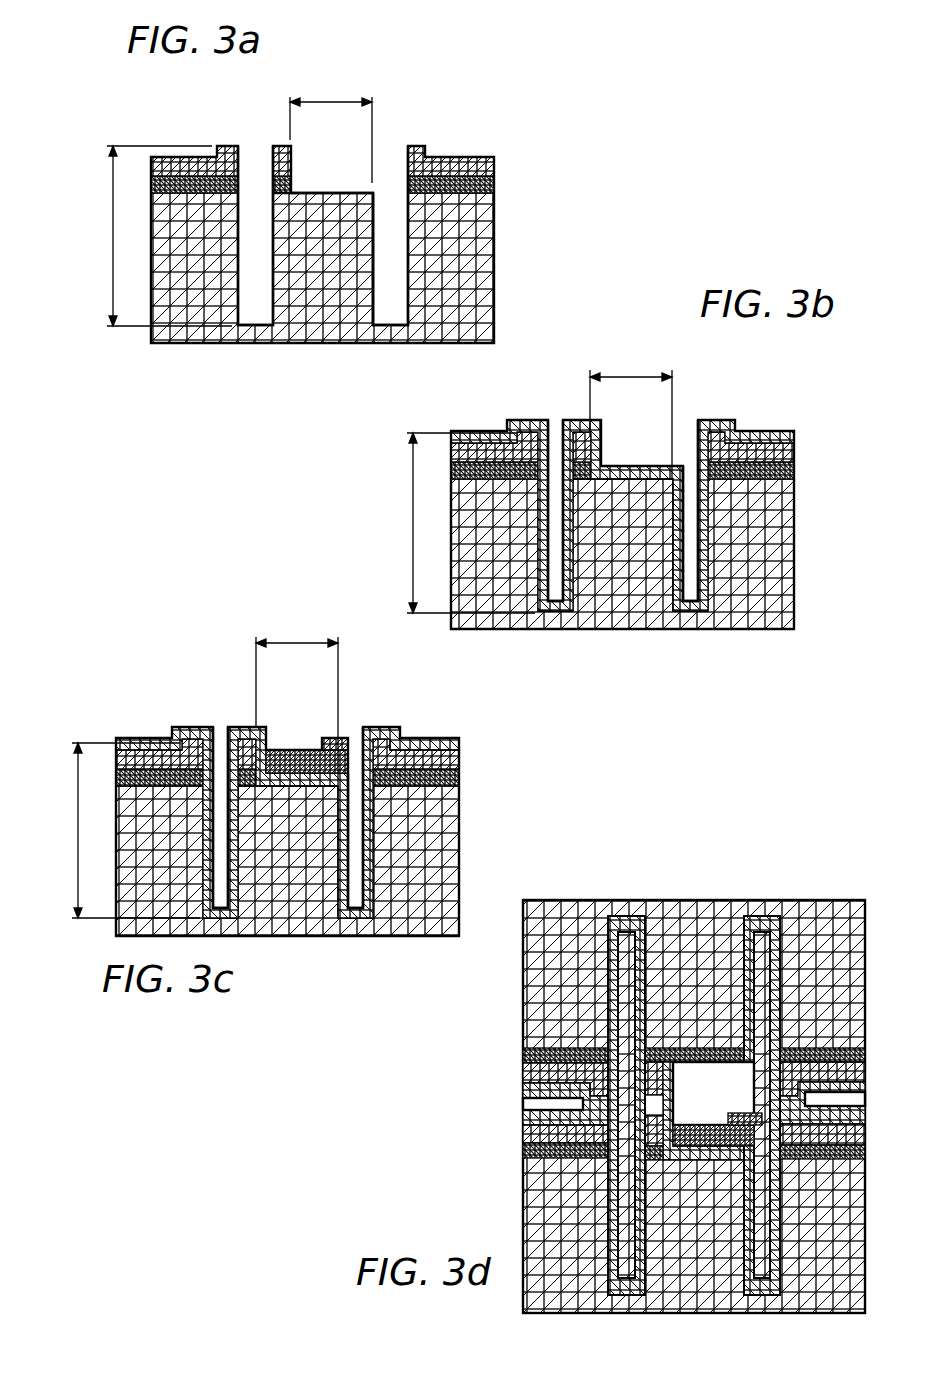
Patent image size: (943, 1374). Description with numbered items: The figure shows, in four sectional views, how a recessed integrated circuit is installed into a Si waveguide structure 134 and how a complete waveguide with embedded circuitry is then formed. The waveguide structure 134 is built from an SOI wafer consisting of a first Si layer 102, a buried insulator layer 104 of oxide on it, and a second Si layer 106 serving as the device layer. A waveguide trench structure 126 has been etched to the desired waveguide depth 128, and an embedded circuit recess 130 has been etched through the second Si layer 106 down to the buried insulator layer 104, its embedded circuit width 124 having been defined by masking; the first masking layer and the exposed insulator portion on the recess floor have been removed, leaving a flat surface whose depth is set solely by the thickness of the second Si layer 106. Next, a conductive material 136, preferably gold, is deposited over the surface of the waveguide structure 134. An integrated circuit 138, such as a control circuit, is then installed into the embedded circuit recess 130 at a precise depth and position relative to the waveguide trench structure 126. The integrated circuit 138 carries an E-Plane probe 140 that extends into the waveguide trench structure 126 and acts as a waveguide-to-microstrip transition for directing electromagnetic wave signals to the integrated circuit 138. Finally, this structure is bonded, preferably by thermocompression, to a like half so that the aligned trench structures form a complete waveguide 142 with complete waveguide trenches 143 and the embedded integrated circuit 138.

In FIG. 3a, the first Si layer 102 is at (495, 228).
In FIG. 3b, the first Si layer 102 is at (797, 515).
In FIG. 3c, the first Si layer 102 is at (460, 822).
In FIG. 3a, the buried insulator layer 104 is at (495, 180).
In FIG. 3b, the buried insulator layer 104 is at (797, 468).
In FIG. 3c, the buried insulator layer 104 is at (460, 775).
In FIG. 3a, the second Si layer 106 is at (495, 168).
In FIG. 3b, the second Si layer 106 is at (797, 455).
In FIG. 3c, the second Si layer 106 is at (460, 762).
In FIG. 3a, the embedded circuit width 124 is at (330, 100).
In FIG. 3b, the embedded circuit width 124 is at (630, 375).
In FIG. 3c, the embedded circuit width 124 is at (272, 642).
In FIG. 3a, the waveguide trench structure 126 is at (254, 185).
In FIG. 3b, the waveguide trench structure 126 is at (553, 487).
In FIG. 3c, the waveguide trench structure 126 is at (221, 780).
In FIG. 3a, the waveguide depth 128 is at (107, 236).
In FIG. 3b, the waveguide depth 128 is at (407, 522).
In FIG. 3c, the waveguide depth 128 is at (78, 830).
In FIG. 3a, the embedded circuit recess 130 is at (344, 193).
In FIG. 3b, the embedded circuit recess 130 is at (644, 466).
In FIG. 3c, the embedded circuit recess 130 is at (282, 773).
In FIG. 3a, the waveguide structure 134 is at (524, 110).
In FIG. 3b, the waveguide structure 134 is at (782, 387).
In FIG. 3c, the waveguide structure 134 is at (153, 693).
In FIG. 3b, the conductive material 136 is at (796, 436).
In FIG. 3c, the conductive material 136 is at (460, 747).
In FIG. 3c, the integrated circuit 138 is at (289, 750).
In FIG. 3d, the integrated circuit 138 is at (693, 1137).
In FIG. 3c, the E-Plane probe 140 is at (327, 738).
In FIG. 3d, the E-Plane probe 140 is at (727, 1118).
In FIG. 3d, the complete waveguide 142 is at (775, 875).
In FIG. 3d, the complete waveguide trenches 143 is at (764, 955).